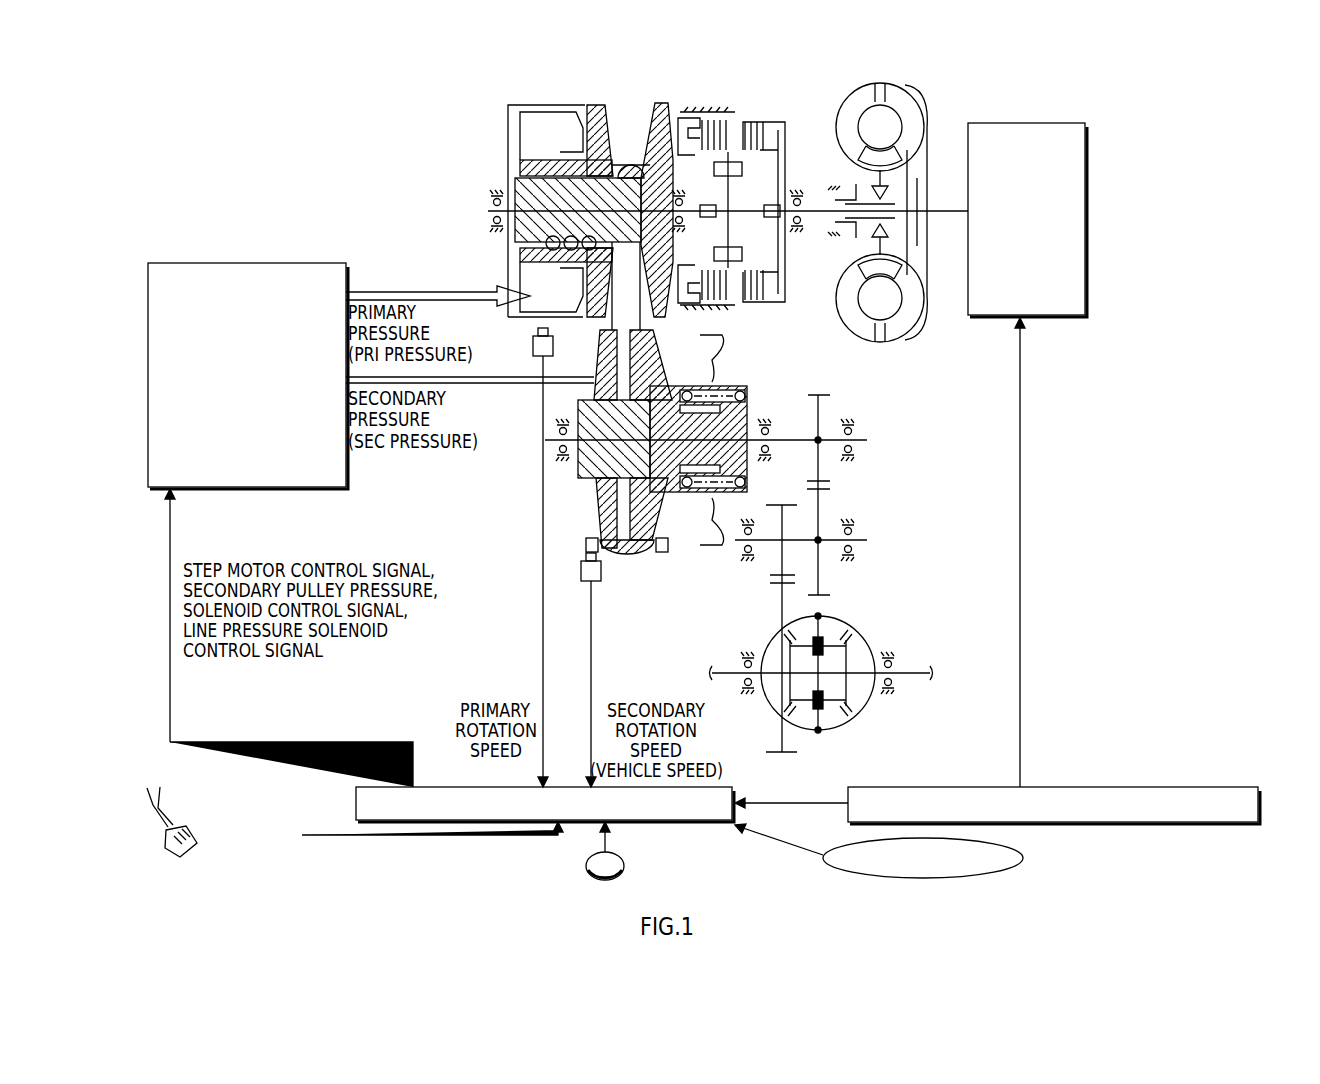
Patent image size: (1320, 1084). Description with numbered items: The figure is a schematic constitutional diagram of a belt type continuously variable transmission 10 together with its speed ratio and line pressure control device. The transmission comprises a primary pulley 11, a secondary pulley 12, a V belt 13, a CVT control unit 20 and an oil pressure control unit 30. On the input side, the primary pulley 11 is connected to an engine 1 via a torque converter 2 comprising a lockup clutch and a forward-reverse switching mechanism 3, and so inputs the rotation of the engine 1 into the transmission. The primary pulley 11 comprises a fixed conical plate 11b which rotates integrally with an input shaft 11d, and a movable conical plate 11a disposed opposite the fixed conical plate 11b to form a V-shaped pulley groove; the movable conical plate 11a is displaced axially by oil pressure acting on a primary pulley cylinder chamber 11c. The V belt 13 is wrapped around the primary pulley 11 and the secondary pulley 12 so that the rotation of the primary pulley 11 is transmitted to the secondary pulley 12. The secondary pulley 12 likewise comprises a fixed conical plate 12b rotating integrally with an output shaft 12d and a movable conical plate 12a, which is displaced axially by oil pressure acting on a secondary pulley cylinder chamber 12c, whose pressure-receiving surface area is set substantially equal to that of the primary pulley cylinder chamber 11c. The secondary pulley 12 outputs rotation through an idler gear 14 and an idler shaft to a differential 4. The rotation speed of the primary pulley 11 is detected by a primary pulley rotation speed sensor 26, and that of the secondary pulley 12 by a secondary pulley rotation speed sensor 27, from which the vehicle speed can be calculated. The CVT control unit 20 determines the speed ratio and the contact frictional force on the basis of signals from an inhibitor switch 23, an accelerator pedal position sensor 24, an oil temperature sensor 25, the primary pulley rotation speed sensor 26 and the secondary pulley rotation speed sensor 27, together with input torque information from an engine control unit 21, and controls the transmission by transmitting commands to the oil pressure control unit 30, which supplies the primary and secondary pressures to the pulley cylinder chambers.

The engine 1 is at (1001, 123).
The torque converter 2 is at (889, 80).
The forward-reverse switching mechanism 3 is at (718, 101).
The differential 4 is at (866, 623).
The belt type continuously variable transmission 10 is at (586, 93).
The primary pulley 11 is at (675, 182).
The movable conical plate 11a is at (596, 108).
The fixed conical plate 11b is at (668, 112).
The primary pulley cylinder chamber 11c is at (547, 112).
The input shaft 11d is at (820, 222).
The secondary pulley 12 is at (706, 459).
The movable conical plate 12a is at (646, 546).
The fixed conical plate 12b is at (600, 500).
The secondary pulley cylinder chamber 12c is at (668, 537).
The output shaft 12d is at (792, 437).
The V belt 13 is at (630, 318).
The idler gear 14 is at (782, 520).
The CVT control unit 20 is at (385, 800).
The engine control unit 21 is at (876, 805).
The inhibitor switch 23 is at (1022, 857).
The accelerator pedal position sensor 24 is at (355, 816).
The oil temperature sensor 25 is at (624, 857).
The primary pulley rotation speed sensor 26 is at (533, 342).
The secondary pulley rotation speed sensor 27 is at (581, 572).
The oil pressure control unit 30 is at (208, 272).